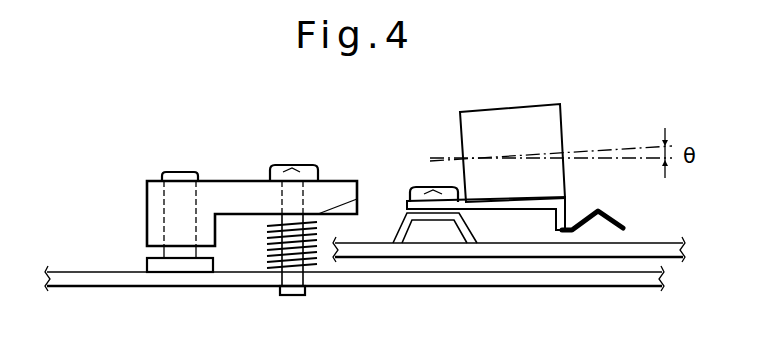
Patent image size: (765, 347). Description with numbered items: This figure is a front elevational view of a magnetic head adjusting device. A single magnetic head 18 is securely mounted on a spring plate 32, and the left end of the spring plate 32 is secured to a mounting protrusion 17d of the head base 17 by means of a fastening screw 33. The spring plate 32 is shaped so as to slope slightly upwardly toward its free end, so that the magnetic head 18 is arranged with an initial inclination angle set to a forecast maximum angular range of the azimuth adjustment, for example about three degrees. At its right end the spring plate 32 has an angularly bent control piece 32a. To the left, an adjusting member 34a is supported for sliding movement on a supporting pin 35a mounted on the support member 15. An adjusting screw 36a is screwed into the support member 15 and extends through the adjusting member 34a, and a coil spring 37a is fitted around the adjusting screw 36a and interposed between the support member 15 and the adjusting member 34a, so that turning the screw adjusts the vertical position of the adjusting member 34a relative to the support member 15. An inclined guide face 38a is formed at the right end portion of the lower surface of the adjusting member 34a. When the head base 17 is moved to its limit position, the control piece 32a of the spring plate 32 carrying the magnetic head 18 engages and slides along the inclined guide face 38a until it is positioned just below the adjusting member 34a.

The support member 15 is at (90, 275).
The head base 17 is at (665, 246).
The mounting protrusion 17d is at (470, 230).
The magnetic head 18 is at (497, 125).
The spring plate 32 is at (548, 198).
The control piece 32a is at (618, 214).
The fastening screw 33 is at (418, 186).
The adjusting member 34a is at (231, 188).
The supporting pin 35a is at (178, 172).
The adjusting screw 36a is at (312, 165).
The coil spring 37a is at (268, 258).
The inclined guide face 38a is at (361, 199).